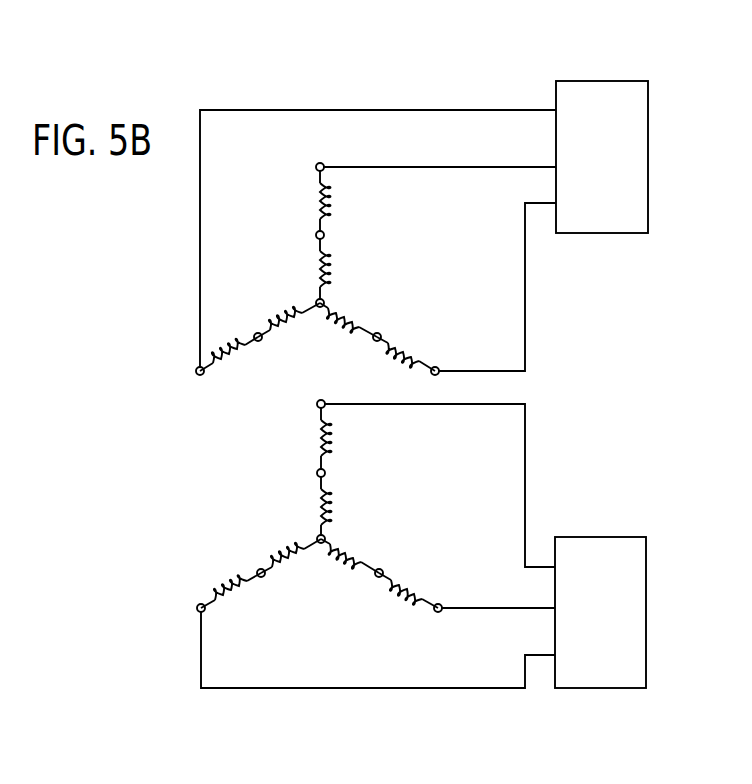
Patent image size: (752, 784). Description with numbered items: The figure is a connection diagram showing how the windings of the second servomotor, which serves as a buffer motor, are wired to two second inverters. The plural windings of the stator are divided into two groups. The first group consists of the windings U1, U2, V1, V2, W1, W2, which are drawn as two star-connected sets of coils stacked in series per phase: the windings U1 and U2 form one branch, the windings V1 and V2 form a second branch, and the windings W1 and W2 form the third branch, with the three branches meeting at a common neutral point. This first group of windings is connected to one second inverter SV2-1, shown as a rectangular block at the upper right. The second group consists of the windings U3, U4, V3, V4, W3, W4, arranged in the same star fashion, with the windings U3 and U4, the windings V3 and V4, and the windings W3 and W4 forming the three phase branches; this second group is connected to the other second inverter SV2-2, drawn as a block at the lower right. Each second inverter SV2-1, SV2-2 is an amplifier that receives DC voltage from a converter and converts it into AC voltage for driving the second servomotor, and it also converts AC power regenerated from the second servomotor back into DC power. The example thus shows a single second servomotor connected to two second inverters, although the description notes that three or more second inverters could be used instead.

The winding U1 is at (340, 200).
The winding U2 is at (341, 269).
The winding V1 is at (229, 341).
The winding V2 is at (289, 305).
The winding W1 is at (403, 368).
The winding W2 is at (348, 333).
The winding U3 is at (343, 438).
The winding U4 is at (344, 508).
The winding V3 is at (230, 578).
The winding V4 is at (291, 545).
The winding W3 is at (408, 605).
The winding W4 is at (349, 569).
The second inverter SV2-1 is at (602, 141).
The second inverter SV2-2 is at (600, 597).